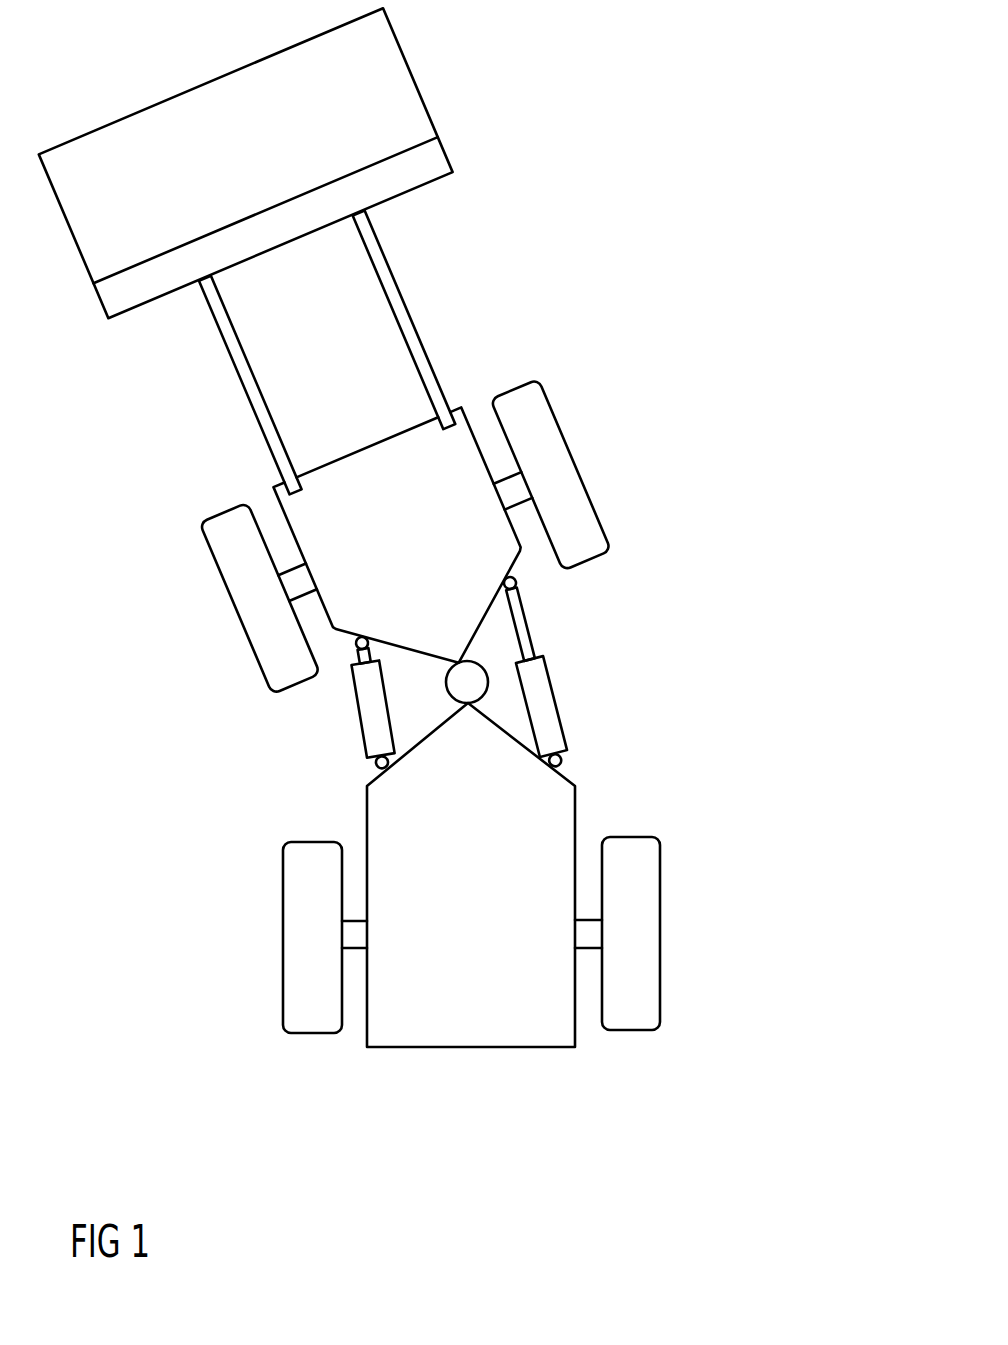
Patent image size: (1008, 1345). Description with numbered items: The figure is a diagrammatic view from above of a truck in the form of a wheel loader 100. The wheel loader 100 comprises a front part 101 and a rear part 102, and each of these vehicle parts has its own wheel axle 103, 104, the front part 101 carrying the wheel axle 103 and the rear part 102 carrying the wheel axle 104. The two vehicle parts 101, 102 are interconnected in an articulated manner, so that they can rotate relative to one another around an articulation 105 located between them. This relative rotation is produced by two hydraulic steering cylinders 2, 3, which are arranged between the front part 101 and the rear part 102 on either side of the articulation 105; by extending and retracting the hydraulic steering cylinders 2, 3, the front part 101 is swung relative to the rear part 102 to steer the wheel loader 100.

The wheel loader 100 is at (712, 533).
The front part 101 is at (488, 560).
The rear part 102 is at (517, 1022).
The wheel axle 103 is at (515, 492).
The wheel axle 104 is at (590, 935).
The articulation 105 is at (473, 683).
The hydraulic steering cylinder 2 is at (373, 707).
The hydraulic steering cylinder 3 is at (548, 733).